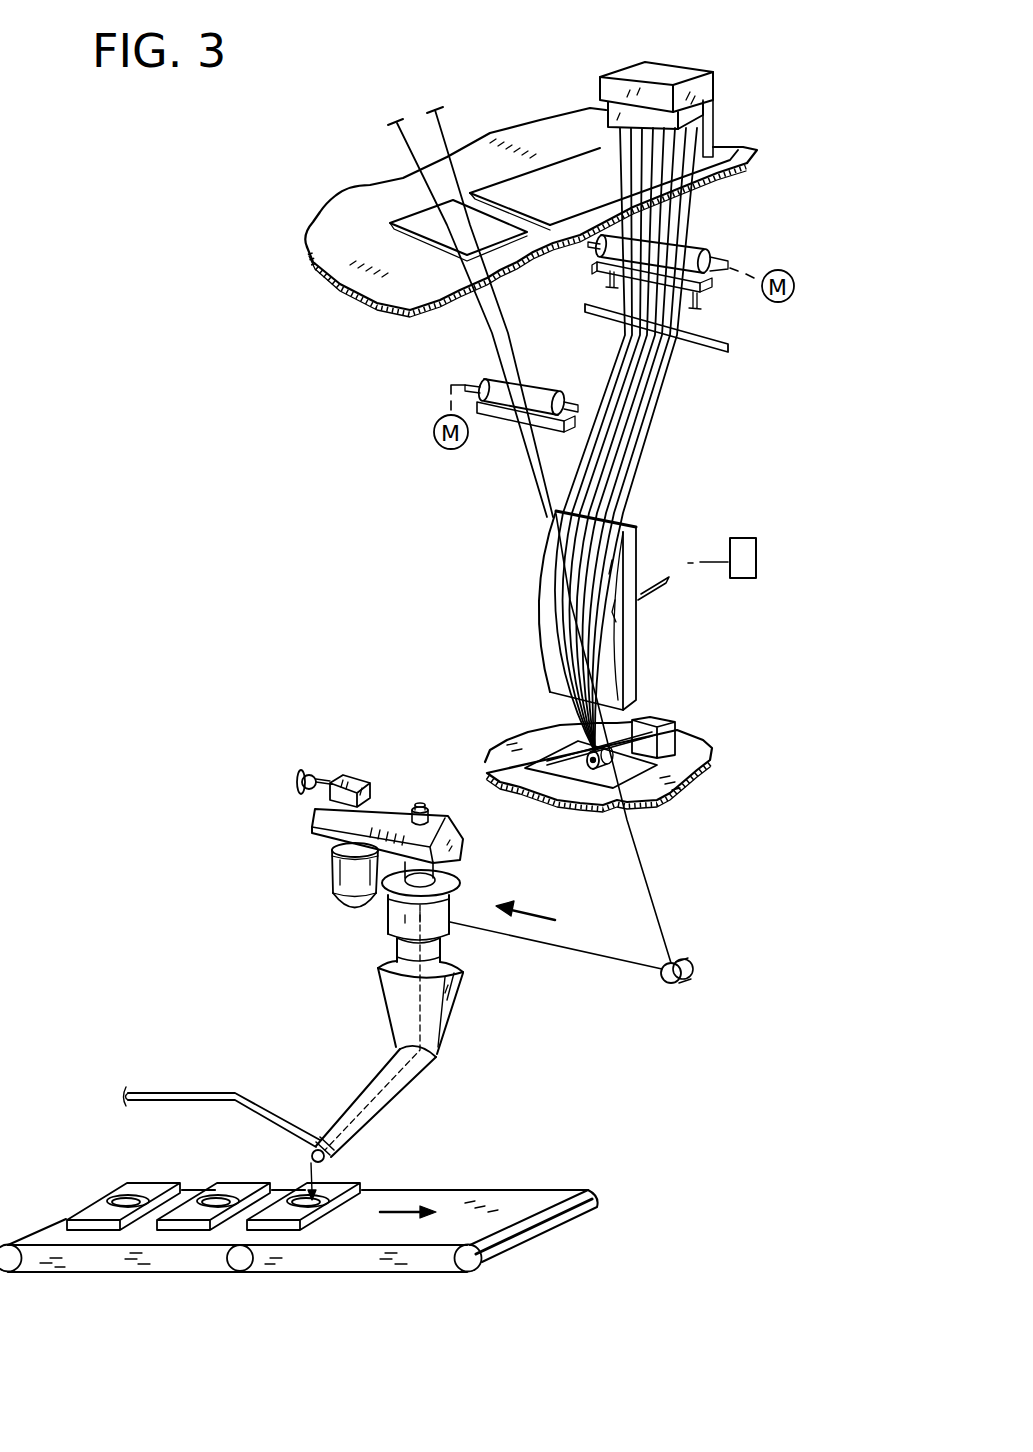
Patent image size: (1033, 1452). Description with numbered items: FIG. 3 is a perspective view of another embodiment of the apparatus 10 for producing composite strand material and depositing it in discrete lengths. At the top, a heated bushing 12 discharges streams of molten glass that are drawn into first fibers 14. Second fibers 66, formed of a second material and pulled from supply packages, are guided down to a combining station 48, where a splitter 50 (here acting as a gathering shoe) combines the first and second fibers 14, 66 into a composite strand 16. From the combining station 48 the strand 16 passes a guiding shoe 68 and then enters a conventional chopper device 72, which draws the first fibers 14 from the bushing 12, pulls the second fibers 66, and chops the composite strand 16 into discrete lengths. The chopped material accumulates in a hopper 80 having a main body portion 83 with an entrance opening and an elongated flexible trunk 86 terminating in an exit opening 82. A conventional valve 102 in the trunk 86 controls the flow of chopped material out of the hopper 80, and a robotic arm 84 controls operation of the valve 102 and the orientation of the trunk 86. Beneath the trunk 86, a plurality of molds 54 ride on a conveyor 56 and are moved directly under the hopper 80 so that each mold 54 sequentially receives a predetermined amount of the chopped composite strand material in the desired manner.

The apparatus 10 is at (746, 73).
The heated bushing 12 is at (690, 110).
The first fibers 14 is at (620, 433).
The composite strands 16 is at (642, 852).
The combining station 48 is at (704, 710).
The splitter 50 is at (572, 757).
The molds 54 is at (293, 1225).
The conveyor 56 is at (497, 1200).
The second fibers 66 is at (508, 330).
The guiding shoe 68 is at (694, 967).
The chopper device 72 is at (242, 875).
The hopper 80 is at (392, 1018).
The exit opening 82 is at (326, 1166).
The main body portion 83 is at (440, 1008).
The robotic arm 84 is at (191, 1095).
The elongated flexible trunk 86 is at (382, 1108).
The valve 102 is at (312, 1144).